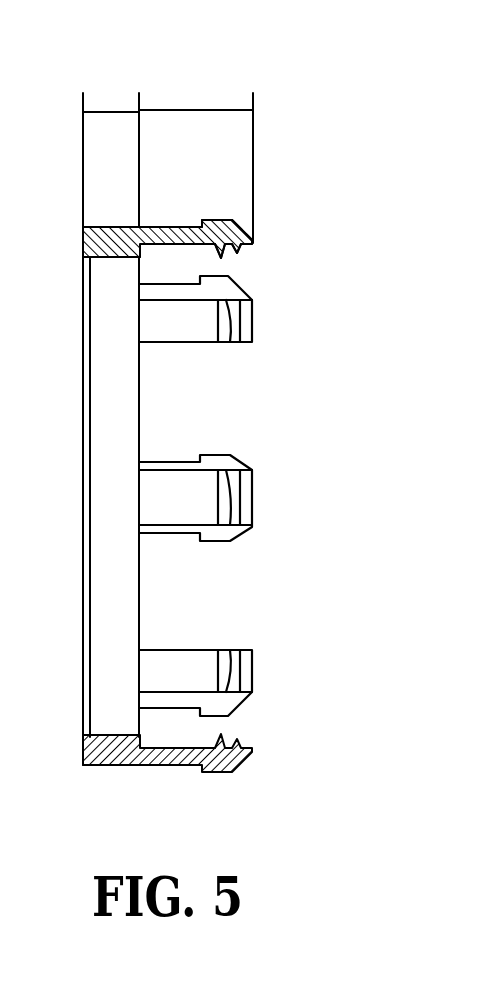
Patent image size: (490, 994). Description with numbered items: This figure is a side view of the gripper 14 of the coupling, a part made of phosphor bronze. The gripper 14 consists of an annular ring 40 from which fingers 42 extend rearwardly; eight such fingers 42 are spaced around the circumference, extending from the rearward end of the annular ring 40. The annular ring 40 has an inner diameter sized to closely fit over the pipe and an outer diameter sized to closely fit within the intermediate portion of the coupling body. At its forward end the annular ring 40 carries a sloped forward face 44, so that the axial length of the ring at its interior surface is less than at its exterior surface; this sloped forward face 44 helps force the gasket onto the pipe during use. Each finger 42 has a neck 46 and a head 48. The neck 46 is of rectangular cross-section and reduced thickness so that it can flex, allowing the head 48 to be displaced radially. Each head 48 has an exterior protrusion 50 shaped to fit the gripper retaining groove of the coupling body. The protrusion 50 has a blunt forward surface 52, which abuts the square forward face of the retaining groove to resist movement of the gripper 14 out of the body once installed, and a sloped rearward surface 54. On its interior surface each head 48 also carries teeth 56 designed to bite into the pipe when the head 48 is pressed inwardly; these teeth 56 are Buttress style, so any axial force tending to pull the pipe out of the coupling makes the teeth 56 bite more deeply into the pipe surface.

The gripper 14 is at (348, 115).
The annular ring 40 is at (110, 112).
The fingers 42 is at (192, 110).
The sloped forward face 44 is at (83, 248).
The neck 46 is at (157, 226).
The head 48 is at (221, 224).
The exterior protrusion 50 is at (220, 225).
The blunt forward surface 52 is at (200, 222).
The sloped rearward surface 54 is at (250, 228).
The teeth 56 is at (234, 250).